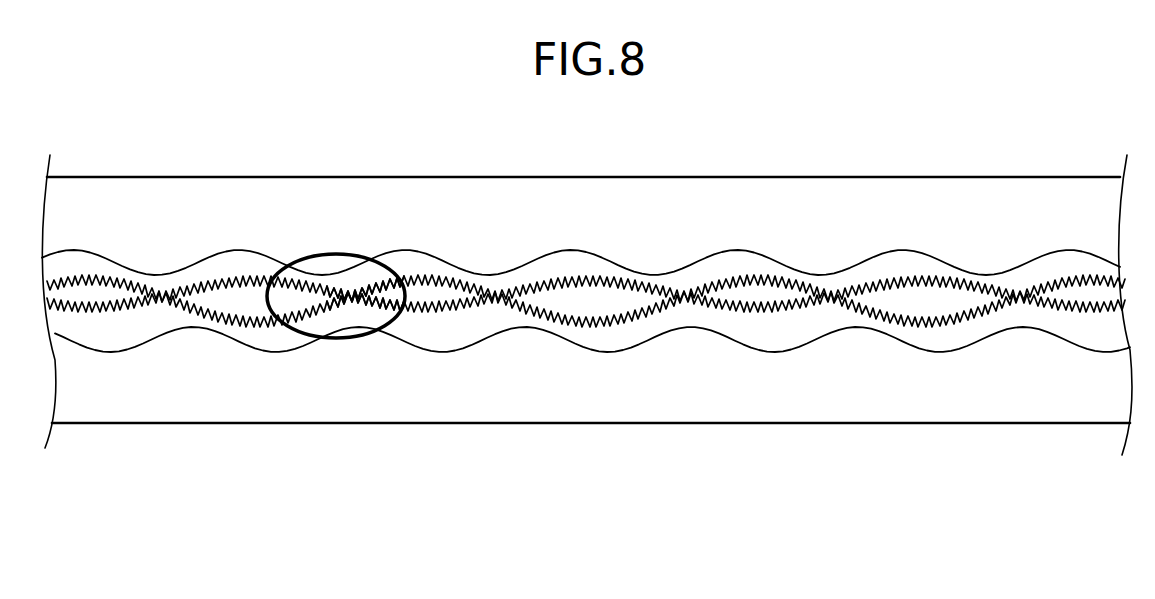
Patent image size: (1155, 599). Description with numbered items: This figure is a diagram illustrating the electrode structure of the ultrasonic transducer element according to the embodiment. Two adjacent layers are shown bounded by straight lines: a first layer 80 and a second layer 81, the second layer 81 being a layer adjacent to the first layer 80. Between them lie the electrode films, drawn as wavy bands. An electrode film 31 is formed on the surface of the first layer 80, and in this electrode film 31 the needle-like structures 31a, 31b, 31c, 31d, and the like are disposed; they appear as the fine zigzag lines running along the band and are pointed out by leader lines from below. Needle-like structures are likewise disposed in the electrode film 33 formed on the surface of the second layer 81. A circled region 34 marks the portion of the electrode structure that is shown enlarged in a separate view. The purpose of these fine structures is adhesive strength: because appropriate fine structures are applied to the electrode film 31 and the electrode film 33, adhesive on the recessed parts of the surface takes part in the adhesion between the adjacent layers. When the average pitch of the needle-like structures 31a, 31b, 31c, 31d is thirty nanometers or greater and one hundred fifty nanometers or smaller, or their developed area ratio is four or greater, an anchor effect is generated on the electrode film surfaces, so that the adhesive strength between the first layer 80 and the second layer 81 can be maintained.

The first layer 80 is at (185, 410).
The second layer 81 is at (165, 193).
The electrode film 31 is at (235, 330).
The needle-like structure 31a is at (370, 303).
The needle-like structure 31b is at (383, 303).
The needle-like structure 31c is at (397, 303).
The needle-like structure 31d is at (408, 303).
The electrode film 33 is at (257, 263).
The region 34 is at (343, 257).